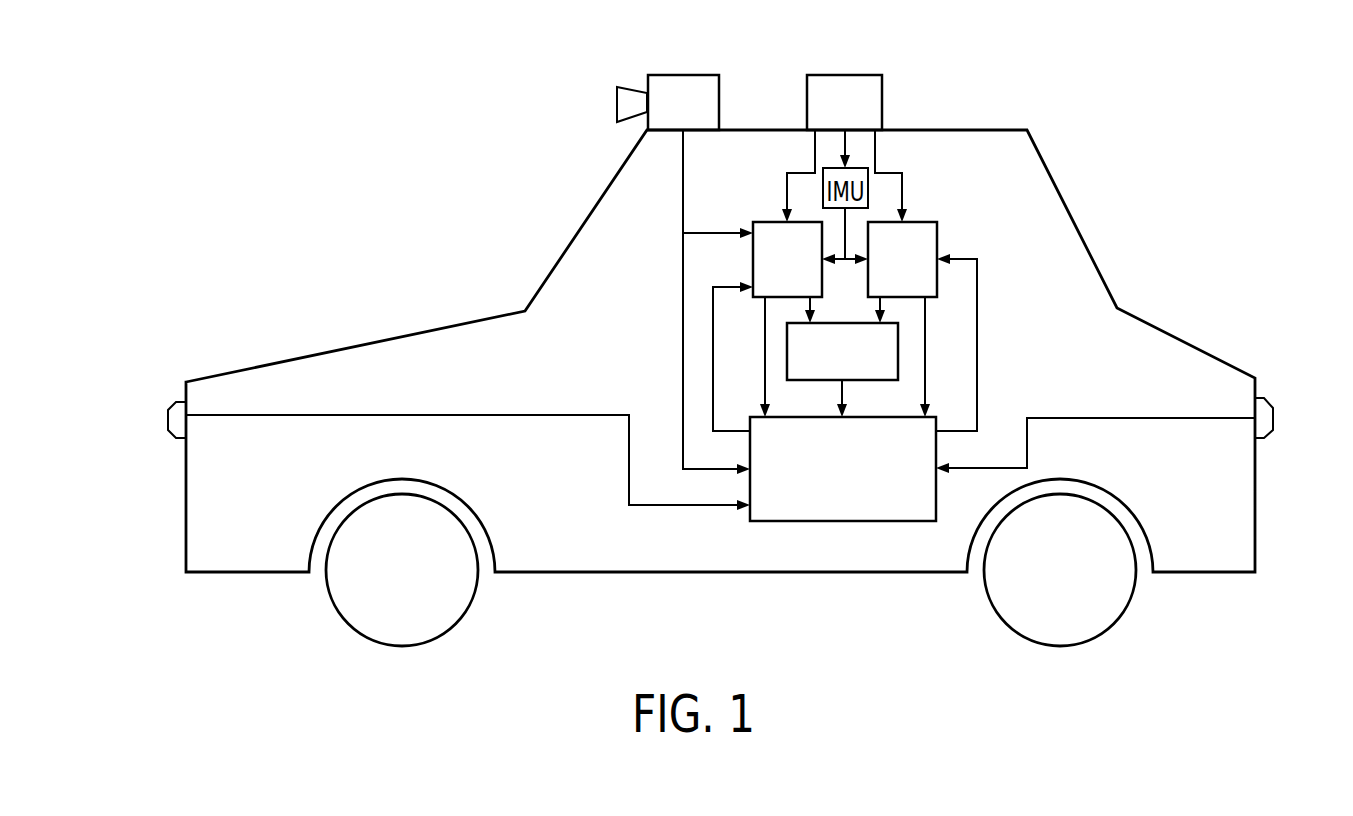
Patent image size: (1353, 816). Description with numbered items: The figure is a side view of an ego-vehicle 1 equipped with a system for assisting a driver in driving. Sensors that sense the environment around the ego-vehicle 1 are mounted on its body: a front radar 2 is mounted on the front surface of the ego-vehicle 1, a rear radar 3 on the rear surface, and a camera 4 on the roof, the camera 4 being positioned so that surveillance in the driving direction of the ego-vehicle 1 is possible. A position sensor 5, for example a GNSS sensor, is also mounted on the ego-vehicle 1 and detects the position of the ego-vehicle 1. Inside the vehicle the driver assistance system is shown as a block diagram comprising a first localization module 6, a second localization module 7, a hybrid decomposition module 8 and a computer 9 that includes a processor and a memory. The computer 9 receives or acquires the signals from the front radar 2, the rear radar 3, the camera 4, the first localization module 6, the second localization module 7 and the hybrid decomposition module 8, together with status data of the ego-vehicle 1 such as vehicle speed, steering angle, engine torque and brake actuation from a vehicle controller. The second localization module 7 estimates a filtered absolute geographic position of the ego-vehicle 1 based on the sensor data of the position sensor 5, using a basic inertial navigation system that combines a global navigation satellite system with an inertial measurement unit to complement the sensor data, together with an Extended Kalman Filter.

The ego-vehicle 1 is at (1017, 130).
The front radar 2 is at (168, 420).
The rear radar 3 is at (1273, 418).
The camera 4 is at (683, 75).
The position sensor 5 is at (845, 75).
The first localization module 6 is at (762, 222).
The second localization module 7 is at (940, 237).
The hybrid decomposition module 8 is at (900, 337).
The computer 9 is at (937, 417).